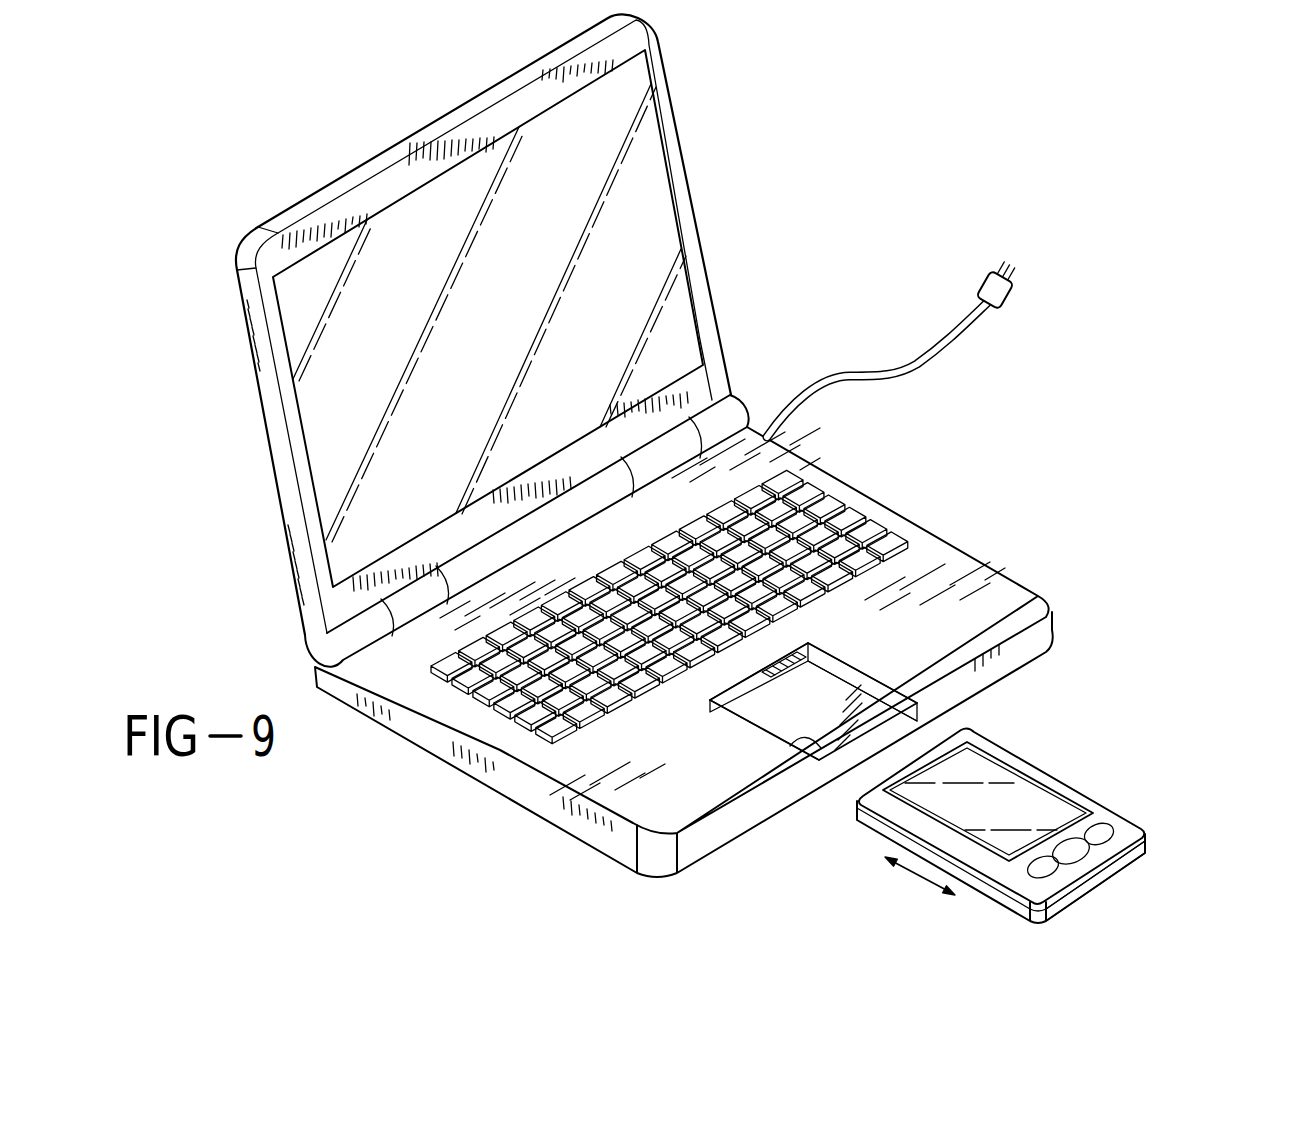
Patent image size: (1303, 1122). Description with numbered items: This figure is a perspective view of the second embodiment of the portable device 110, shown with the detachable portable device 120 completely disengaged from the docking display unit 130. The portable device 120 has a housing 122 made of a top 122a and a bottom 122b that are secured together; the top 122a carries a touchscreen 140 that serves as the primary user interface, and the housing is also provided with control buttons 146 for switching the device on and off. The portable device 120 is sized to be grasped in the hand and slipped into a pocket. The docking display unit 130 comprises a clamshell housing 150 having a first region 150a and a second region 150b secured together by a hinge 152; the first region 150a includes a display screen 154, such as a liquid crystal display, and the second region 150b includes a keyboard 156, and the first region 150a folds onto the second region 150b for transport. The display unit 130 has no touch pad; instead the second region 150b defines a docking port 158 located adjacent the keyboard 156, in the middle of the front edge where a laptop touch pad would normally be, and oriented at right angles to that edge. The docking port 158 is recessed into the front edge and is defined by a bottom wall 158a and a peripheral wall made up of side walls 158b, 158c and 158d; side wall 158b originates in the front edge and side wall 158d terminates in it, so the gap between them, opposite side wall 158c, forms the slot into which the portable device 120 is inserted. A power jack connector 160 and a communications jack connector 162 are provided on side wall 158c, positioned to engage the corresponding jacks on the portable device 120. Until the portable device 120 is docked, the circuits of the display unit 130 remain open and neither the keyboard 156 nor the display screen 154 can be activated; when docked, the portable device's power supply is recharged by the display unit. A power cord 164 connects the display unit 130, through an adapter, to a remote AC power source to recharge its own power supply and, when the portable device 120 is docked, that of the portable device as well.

The portable device for computing, communication and/or entertainment 110 is at (715, 469).
The detachable portable device 120 is at (1072, 826).
The housing 122 is at (1057, 826).
The top 122a is at (1123, 823).
The bottom 122b is at (1110, 880).
The touchscreen 140 is at (1033, 800).
The control buttons 146 is at (1103, 830).
The docking display unit 130 is at (504, 340).
The housing 150 is at (618, 445).
The first region 150a is at (437, 324).
The second region 150b is at (704, 652).
The hinge 152 is at (657, 452).
The display screen 154 is at (515, 321).
The keyboard 156 is at (862, 521).
The docking port 158 is at (865, 728).
The bottom wall 158a is at (903, 673).
The side wall 158b is at (802, 748).
The side wall 158c is at (770, 690).
The side wall 158d is at (877, 720).
The power jack connector 160 is at (766, 684).
The communications jack connector 162 is at (790, 747).
The power cord 164 is at (970, 333).